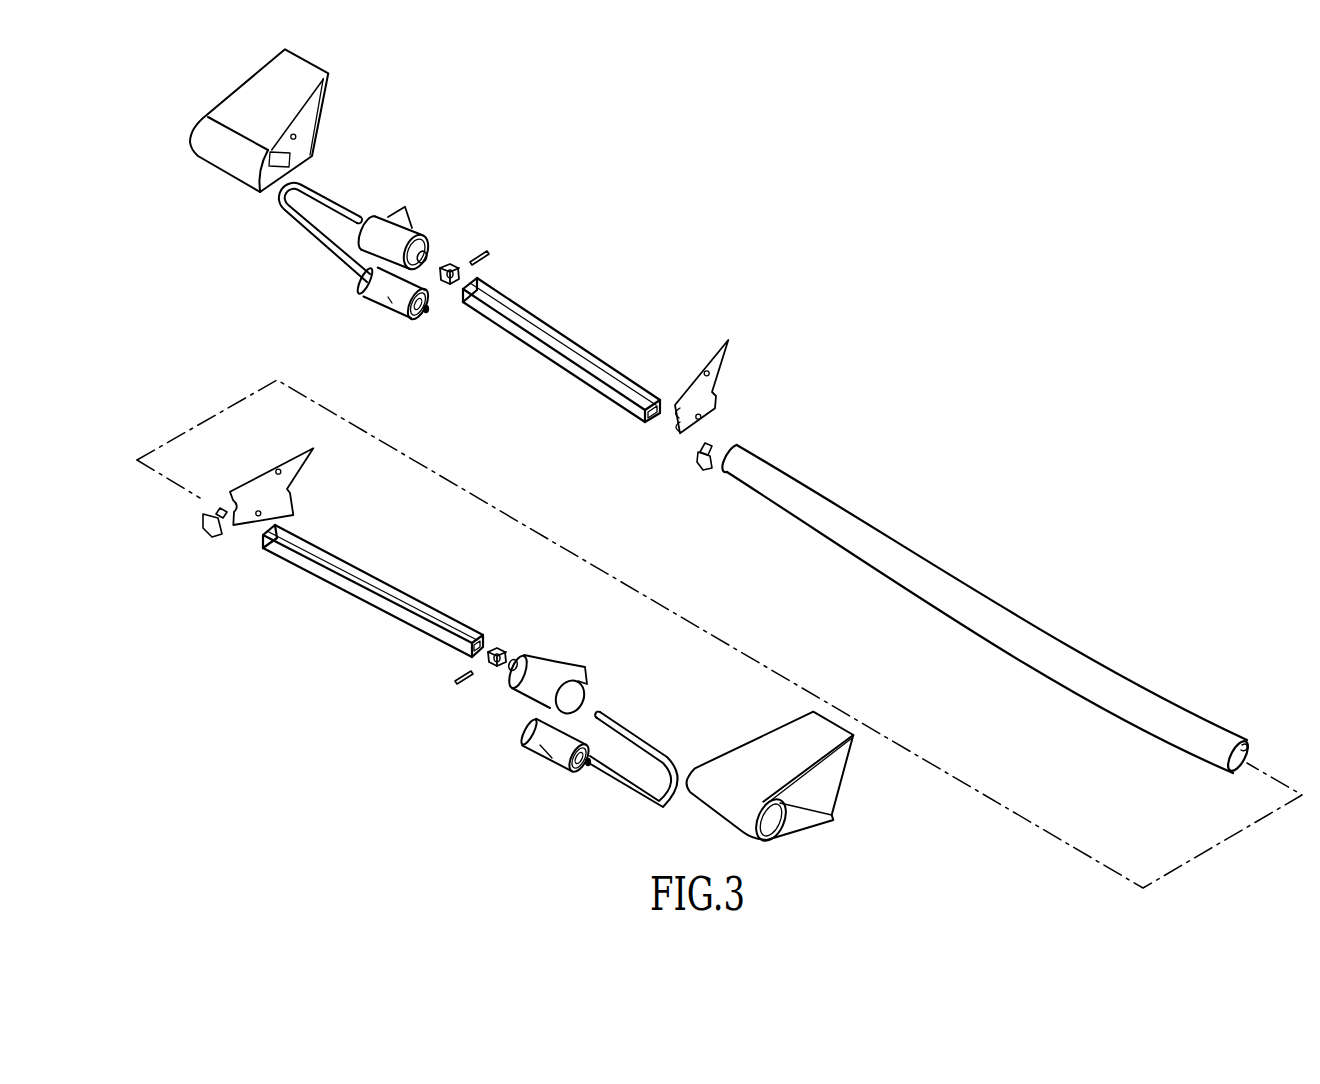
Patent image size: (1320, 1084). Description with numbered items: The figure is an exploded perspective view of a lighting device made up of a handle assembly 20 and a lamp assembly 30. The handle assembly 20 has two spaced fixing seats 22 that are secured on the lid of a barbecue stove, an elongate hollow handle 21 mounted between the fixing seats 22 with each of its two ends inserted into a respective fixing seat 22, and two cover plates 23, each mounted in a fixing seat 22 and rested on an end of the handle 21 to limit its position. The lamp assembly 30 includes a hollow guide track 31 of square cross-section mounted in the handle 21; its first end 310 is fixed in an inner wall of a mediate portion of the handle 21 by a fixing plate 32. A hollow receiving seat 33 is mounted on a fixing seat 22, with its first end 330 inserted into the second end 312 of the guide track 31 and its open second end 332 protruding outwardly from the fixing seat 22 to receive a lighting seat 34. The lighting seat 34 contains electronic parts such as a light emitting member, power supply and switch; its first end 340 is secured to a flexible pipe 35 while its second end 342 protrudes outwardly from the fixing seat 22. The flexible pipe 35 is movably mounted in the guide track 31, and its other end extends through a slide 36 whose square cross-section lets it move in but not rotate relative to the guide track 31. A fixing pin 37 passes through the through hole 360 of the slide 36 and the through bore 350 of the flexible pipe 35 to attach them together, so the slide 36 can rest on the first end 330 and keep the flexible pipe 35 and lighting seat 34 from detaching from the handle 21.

The handle assembly 20 is at (955, 558).
The handle 21 is at (1051, 655).
The fixing seat 22 is at (230, 158).
The cover plate 23 is at (677, 437).
The lamp assembly 30 is at (599, 335).
The guide track 31 is at (552, 323).
The first end of guide track 310 is at (650, 398).
The second end of guide track 312 is at (485, 287).
The fixing plate 32 is at (700, 468).
The receiving seat 33 is at (390, 233).
The first end of receiving seat 330 is at (428, 253).
The second end of receiving seat 332 is at (572, 697).
The lighting seat 34 is at (392, 298).
The first end of lighting seat 340 is at (360, 290).
The second end of lighting seat 342 is at (417, 330).
The flexible pipe 35 is at (290, 236).
The through bore 350 is at (354, 214).
The slide 36 is at (453, 265).
The through hole 360 is at (447, 284).
The fixing pin 37 is at (485, 250).